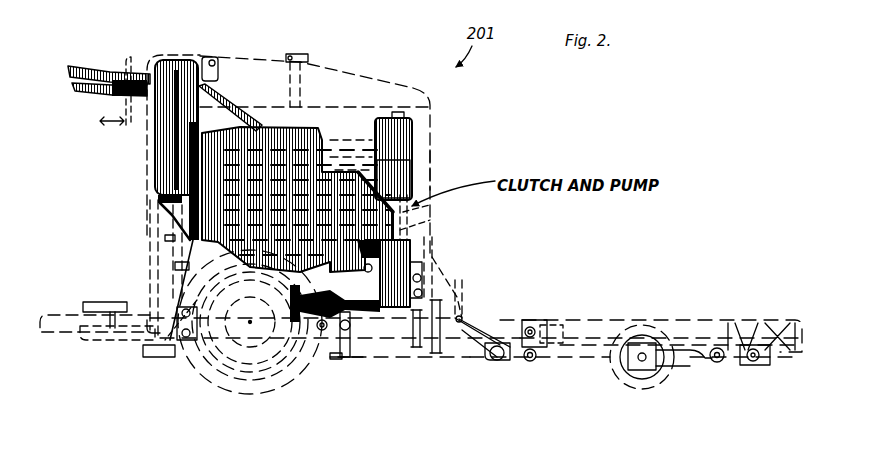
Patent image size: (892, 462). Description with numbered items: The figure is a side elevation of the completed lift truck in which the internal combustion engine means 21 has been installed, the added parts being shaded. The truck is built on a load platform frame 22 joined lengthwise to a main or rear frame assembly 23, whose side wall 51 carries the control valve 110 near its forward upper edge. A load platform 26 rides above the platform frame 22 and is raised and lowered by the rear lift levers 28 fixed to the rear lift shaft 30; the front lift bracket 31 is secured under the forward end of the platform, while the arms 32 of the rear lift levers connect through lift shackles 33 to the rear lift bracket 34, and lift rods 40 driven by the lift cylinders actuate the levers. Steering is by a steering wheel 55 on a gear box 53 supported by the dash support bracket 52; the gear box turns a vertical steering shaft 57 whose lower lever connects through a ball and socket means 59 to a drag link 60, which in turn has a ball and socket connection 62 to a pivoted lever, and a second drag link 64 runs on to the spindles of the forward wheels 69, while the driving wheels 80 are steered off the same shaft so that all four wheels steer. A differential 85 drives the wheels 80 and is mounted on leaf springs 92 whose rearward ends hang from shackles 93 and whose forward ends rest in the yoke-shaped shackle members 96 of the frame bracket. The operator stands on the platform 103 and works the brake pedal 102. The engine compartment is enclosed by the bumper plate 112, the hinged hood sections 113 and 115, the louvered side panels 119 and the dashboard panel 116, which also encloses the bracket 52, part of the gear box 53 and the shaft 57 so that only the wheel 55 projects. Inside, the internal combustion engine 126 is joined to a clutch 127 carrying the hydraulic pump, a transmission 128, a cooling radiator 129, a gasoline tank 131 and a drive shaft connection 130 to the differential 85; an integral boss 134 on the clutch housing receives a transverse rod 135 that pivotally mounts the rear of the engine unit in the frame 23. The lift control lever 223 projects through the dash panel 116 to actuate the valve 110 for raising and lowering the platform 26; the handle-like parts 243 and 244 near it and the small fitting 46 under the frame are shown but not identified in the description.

The internal combustion engine means 21 is at (312, 128).
The load platform frame 22 is at (466, 355).
The main or rear frame assembly 23 is at (437, 355).
The load platform 26 is at (604, 320).
The rear lift levers 28 is at (512, 365).
The rear lift shaft 30 is at (490, 358).
The front lift bracket 31 is at (750, 325).
The arms of rear lift levers 32 is at (533, 362).
The lift shackles 33 is at (545, 324).
The rear lift bracket 34 is at (530, 320).
The lift rods 40 is at (462, 318).
The foot bracket 46 is at (343, 362).
The side wall 51 is at (406, 229).
The dash support bracket 52 is at (156, 213).
The gear box 53 is at (150, 64).
The steering wheel 55 is at (131, 56).
The steering shaft 57 is at (160, 226).
The ball and socket means 59 is at (150, 358).
The drag link 60 is at (185, 345).
The ball and socket connection 62 is at (352, 350).
The second drag link 64 is at (410, 352).
The forward wheels 69 is at (622, 378).
The driving wheels 80 is at (236, 383).
The differential 85 is at (176, 263).
The leaf springs 92 is at (260, 386).
The shackles 93 is at (165, 340).
The yoke-shaped shackle members 96 is at (320, 332).
The brake pedal 102 is at (104, 302).
The operator platform 103 is at (56, 312).
The control valve 110 is at (445, 272).
The bumper plate 112 is at (432, 170).
The hood section 113 is at (365, 82).
The second hood section 115 is at (246, 60).
The dashboard panel 116 is at (190, 52).
The side louver panels 119 is at (425, 211).
The internal combustion engine 126 is at (374, 122).
The clutch 127 is at (386, 170).
The transmission 128 is at (382, 247).
The cooling radiator 129 is at (166, 162).
The drive shaft connection 130 is at (333, 318).
The gasoline tank 131 is at (402, 136).
The integral boss 134 is at (418, 270).
The rod 135 is at (420, 262).
The lift control lever 223 is at (112, 92).
The lower handle grip 243 is at (90, 90).
The upper handle grip 244 is at (88, 68).